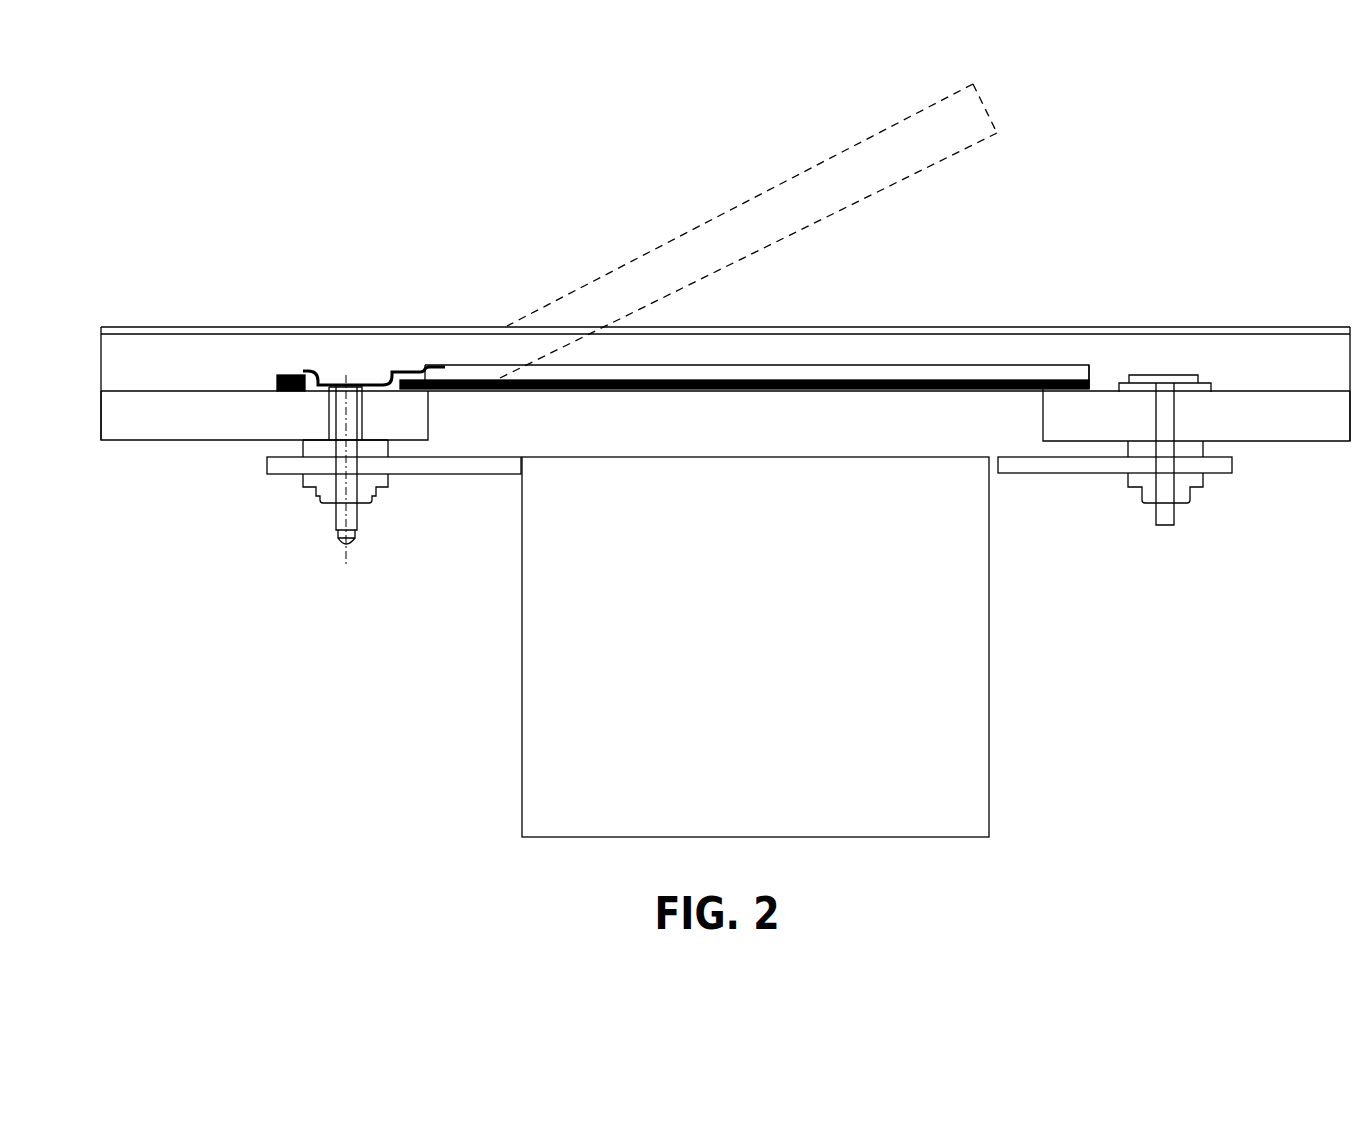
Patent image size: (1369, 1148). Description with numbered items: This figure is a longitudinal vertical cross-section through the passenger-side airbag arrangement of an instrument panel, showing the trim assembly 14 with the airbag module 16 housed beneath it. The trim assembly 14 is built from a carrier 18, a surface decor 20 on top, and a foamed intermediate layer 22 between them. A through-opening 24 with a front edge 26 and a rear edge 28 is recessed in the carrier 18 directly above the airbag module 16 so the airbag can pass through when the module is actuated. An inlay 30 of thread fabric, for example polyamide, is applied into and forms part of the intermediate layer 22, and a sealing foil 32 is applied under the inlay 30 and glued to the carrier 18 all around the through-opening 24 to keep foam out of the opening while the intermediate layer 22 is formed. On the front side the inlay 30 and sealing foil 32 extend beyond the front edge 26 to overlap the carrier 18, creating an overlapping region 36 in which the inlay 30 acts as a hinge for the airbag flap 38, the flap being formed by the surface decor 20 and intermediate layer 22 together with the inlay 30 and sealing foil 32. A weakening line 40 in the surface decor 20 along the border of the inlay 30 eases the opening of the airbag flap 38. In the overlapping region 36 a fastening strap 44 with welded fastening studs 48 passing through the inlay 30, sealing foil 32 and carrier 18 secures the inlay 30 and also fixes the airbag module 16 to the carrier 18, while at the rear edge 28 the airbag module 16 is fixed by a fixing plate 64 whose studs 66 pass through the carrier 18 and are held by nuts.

The trim assembly 14 is at (1132, 236).
The airbag module 16 is at (1032, 774).
The carrier 18 is at (690, 423).
The surface decor 20 is at (183, 332).
The foamed intermediate layer 22 is at (113, 375).
The through-opening 24 is at (885, 408).
The front edge 26 is at (423, 419).
The rear edge 28 is at (1043, 428).
The inlay 30 is at (744, 355).
The sealing foil 32 is at (703, 380).
The overlapping region 36 is at (290, 347).
The airbag flap 38 is at (999, 93).
The weakening line 40 is at (1119, 318).
The fastening strap 44 is at (417, 347).
The fastening stud 48 is at (340, 510).
The fixing plate 64 is at (1210, 385).
The stud 66 is at (1160, 508).